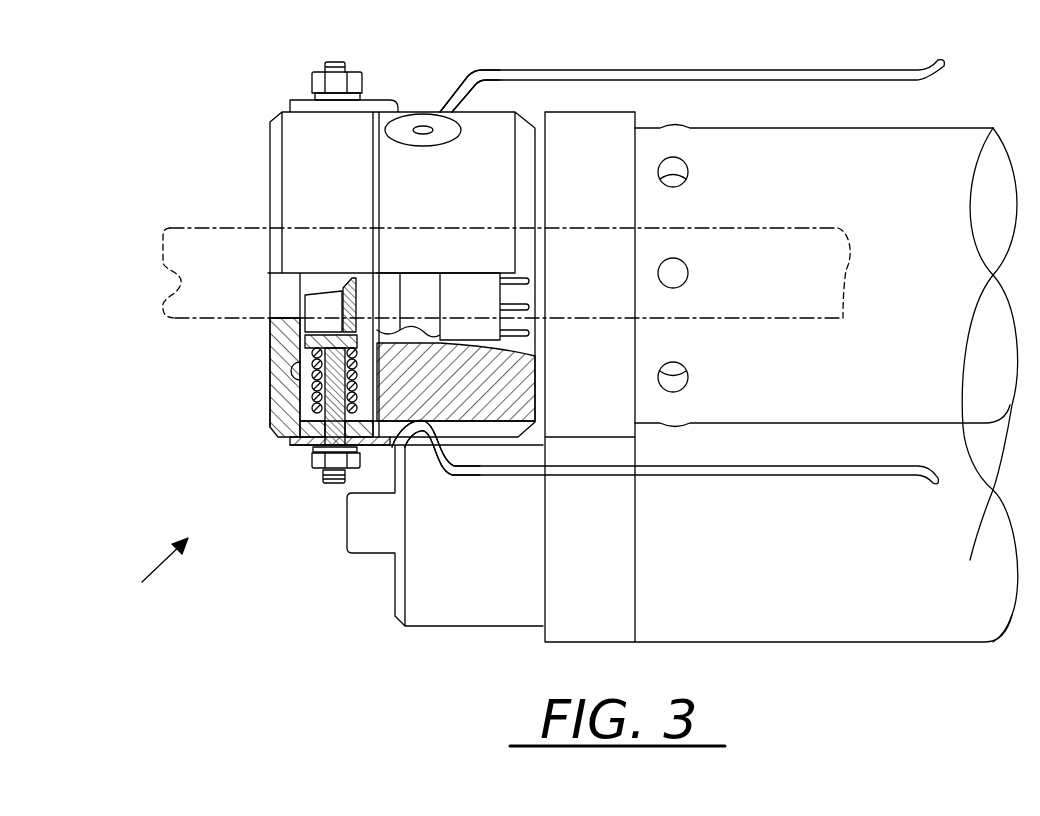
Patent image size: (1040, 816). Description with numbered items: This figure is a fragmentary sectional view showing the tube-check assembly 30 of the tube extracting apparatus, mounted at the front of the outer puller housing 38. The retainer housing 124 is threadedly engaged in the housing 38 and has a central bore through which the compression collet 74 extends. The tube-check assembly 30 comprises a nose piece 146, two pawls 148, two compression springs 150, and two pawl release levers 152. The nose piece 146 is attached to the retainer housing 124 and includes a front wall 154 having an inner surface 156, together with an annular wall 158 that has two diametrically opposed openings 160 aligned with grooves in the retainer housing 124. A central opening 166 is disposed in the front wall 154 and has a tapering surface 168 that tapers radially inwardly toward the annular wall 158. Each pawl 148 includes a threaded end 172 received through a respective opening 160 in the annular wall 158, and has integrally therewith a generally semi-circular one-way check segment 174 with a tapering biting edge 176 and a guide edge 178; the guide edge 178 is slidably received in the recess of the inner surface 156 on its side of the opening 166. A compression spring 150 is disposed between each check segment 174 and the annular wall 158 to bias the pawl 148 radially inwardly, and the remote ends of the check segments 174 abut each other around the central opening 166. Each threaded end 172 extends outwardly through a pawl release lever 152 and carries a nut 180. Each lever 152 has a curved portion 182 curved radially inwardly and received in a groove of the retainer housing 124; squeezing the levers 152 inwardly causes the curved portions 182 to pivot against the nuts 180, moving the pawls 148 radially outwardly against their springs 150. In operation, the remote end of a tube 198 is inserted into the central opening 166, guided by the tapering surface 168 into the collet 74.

The tube-check assembly 30 is at (154, 575).
The outer puller housing 38 is at (935, 128).
The compression collet 74 is at (472, 307).
The retainer housing 124 is at (502, 377).
The nose piece 146 is at (275, 422).
The pawl 148 is at (363, 383).
The compression spring 150 is at (312, 437).
The pawl release lever 152 is at (630, 72).
The front wall 154 is at (303, 368).
The inner surface 156 is at (290, 402).
The annular wall 158 is at (323, 447).
The opening 160 is at (322, 445).
The central opening 166 is at (278, 297).
The tapering surface 168 is at (278, 330).
The threaded end 172 is at (338, 62).
The one-way check segment 174 is at (355, 320).
The tapering biting edge 176 is at (345, 332).
The guide edge 178 is at (305, 345).
The nut 180 is at (362, 80).
The curved portion 182 is at (443, 82).
The tube 198 is at (198, 227).